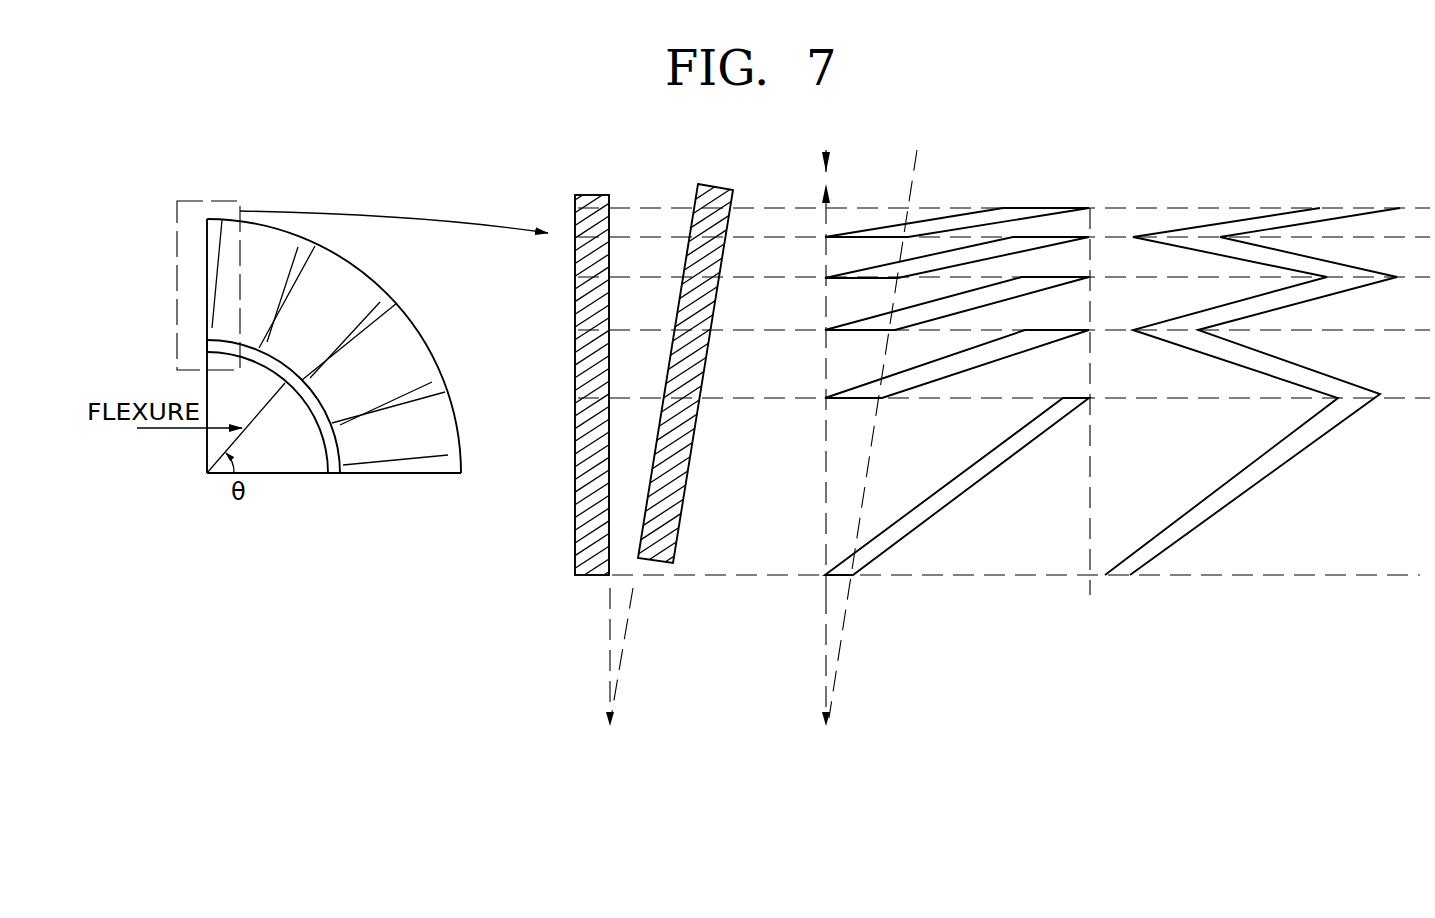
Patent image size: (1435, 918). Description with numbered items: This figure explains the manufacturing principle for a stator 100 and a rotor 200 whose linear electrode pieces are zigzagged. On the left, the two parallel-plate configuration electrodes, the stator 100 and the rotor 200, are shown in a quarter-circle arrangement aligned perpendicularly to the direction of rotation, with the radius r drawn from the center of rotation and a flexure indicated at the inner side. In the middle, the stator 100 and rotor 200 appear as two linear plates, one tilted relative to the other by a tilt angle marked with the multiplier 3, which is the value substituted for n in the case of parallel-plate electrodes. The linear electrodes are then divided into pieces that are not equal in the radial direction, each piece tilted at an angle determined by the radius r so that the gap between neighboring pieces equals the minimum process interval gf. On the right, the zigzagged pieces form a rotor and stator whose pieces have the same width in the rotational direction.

The stator 100 is at (457, 440).
The rotor 200 is at (335, 474).
The angle 3θo between plate members 3 is at (537, 652).
The minimum interval between electrodes gf is at (963, 250).
The radius r is at (246, 428).